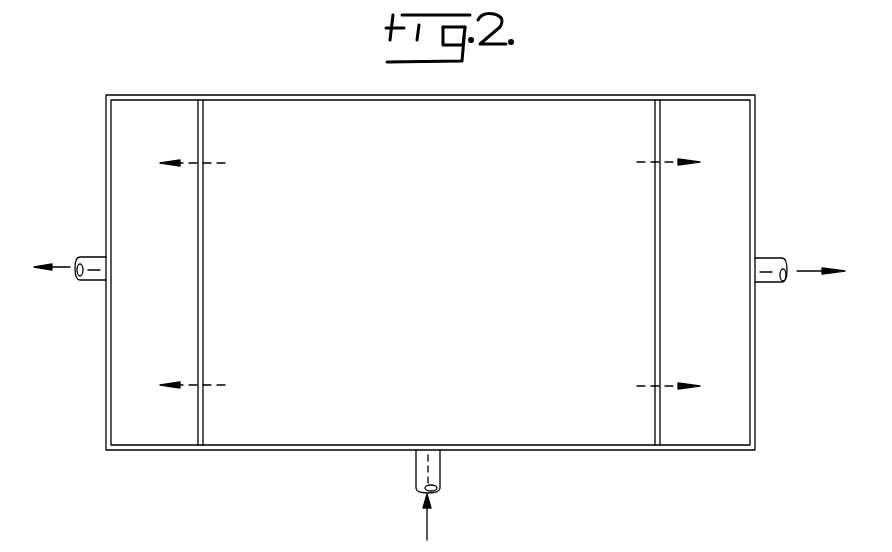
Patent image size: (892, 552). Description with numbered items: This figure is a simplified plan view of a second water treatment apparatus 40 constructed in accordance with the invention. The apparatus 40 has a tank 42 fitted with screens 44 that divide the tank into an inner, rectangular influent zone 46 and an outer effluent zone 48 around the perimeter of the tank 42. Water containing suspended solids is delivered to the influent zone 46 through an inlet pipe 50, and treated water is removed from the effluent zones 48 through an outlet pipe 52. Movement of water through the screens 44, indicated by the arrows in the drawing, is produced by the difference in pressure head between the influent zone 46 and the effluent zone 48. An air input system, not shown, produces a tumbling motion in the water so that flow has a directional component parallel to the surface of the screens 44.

The apparatus 40 is at (172, 80).
The tank 42 is at (560, 97).
The screens 44 is at (203, 112).
The influent zone 46 is at (429, 272).
The effluent zone 48 is at (430, 272).
The inlet pipe 50 is at (414, 473).
The outlet pipe 52 is at (90, 285).